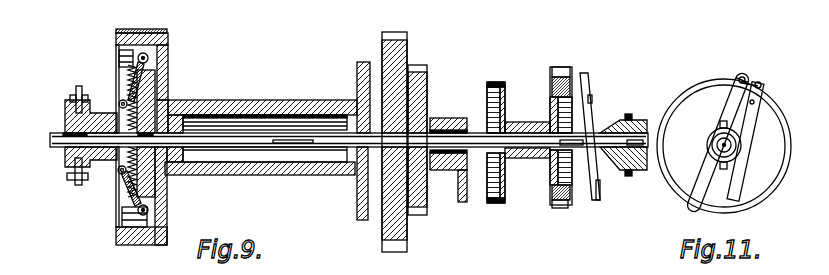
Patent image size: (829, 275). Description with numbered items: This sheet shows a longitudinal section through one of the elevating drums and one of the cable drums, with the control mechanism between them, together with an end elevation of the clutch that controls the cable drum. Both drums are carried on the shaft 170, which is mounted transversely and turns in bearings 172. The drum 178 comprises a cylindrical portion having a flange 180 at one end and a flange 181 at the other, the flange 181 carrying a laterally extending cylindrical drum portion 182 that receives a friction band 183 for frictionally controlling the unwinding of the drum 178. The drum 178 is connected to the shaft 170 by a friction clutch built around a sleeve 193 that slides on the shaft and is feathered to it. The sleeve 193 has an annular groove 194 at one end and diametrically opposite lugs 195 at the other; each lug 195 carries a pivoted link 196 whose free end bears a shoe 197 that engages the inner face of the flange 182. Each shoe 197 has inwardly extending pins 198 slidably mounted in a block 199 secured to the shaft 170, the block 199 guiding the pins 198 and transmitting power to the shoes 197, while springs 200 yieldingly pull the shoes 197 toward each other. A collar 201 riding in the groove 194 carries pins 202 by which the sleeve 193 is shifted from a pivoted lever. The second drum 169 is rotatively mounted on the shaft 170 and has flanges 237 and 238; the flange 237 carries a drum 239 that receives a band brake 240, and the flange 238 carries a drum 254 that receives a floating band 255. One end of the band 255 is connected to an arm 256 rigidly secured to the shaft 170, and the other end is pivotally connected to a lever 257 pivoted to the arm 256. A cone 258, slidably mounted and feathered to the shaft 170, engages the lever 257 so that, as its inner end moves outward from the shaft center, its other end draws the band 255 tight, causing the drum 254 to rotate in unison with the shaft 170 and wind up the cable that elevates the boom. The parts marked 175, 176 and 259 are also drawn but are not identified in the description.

In FIG. 9, the drum 169 is at (520, 163).
In FIG. 9, the shaft 170 is at (266, 146).
In FIG. 11, the shaft 170 is at (716, 151).
In FIG. 9, the bearings 172 is at (452, 118).
In FIG. 9, the disk 175 is at (385, 232).
In FIG. 9, the plate 176 is at (422, 200).
In FIG. 9, the drum 178 is at (256, 175).
In FIG. 9, the flange 180 is at (357, 82).
In FIG. 9, the flange 181 is at (170, 44).
In FIG. 9, the cylindrical flange or drum portion 182 is at (116, 39).
In FIG. 9, the friction band 183 is at (160, 30).
In FIG. 9, the sleeve 193 is at (72, 121).
In FIG. 9, the annular groove 194 is at (64, 168).
In FIG. 9, the lugs 195 is at (130, 74).
In FIG. 9, the pivoted link 196 is at (127, 202).
In FIG. 9, the shoe 197 is at (120, 52).
In FIG. 9, the pins 198 is at (168, 74).
In FIG. 9, the block 199 is at (167, 178).
In FIG. 9, the springs 200 is at (128, 80).
In FIG. 9, the collar 201 is at (70, 95).
In FIG. 9, the pins 202 is at (50, 215).
In FIG. 9, the flange 237 is at (505, 200).
In FIG. 9, the flange 238 is at (570, 205).
In FIG. 11, the flange 238 is at (708, 147).
In FIG. 9, the drum 239 is at (488, 105).
In FIG. 9, the band brake 240 is at (496, 82).
In FIG. 9, the drum 254 is at (572, 78).
In FIG. 11, the drum 254 is at (722, 128).
In FIG. 9, the floating band 255 is at (572, 206).
In FIG. 11, the floating band 255 is at (728, 211).
In FIG. 9, the arm 256 is at (582, 116).
In FIG. 11, the arm 256 is at (737, 100).
In FIG. 9, the lever 257 is at (599, 185).
In FIG. 11, the lever 257 is at (742, 134).
In FIG. 9, the cone 258 is at (641, 166).
In FIG. 11, the pin 259 is at (738, 156).